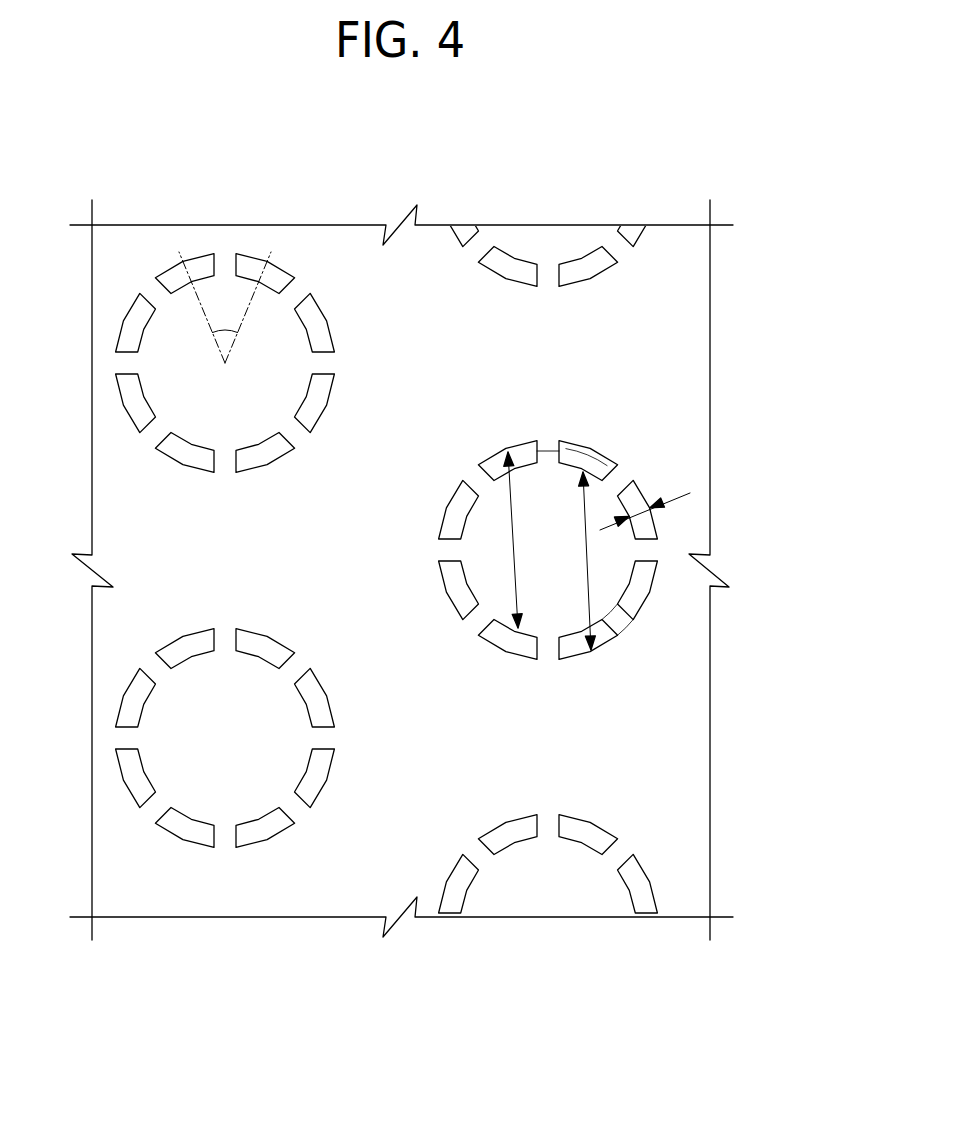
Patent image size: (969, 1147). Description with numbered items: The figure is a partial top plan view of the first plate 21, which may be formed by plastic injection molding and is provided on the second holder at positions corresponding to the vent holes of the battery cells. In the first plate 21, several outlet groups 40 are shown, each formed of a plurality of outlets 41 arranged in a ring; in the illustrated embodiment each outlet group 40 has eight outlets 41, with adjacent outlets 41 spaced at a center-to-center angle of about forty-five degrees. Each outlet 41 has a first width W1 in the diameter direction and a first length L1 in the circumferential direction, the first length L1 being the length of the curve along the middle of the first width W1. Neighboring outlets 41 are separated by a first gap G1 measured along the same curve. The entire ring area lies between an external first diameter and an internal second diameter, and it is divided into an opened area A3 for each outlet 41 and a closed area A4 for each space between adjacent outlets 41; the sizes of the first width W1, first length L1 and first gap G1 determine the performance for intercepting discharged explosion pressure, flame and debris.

The first plate 21 is at (688, 330).
The outlet group 40 is at (403, 489).
The outlet 41 is at (127, 337).
The first gap G1 is at (547, 448).
The first length L1 is at (598, 452).
The first width W1 is at (645, 496).
The opened area A3 is at (643, 598).
The closed area A4 is at (622, 622).